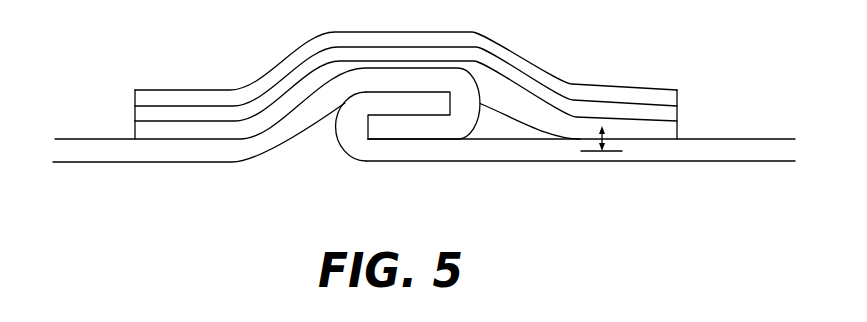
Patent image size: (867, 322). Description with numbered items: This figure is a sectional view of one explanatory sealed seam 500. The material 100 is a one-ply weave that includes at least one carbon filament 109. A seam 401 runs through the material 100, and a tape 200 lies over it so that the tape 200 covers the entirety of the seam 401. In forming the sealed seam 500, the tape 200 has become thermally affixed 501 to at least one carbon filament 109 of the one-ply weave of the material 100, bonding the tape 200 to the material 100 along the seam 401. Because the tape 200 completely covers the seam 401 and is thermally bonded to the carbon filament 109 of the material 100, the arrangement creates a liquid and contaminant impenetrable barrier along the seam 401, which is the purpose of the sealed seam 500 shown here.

The material 100 is at (690, 163).
The tape 200 is at (252, 80).
The seam 401 is at (407, 174).
The sealed seam 500 is at (424, 115).
The thermally affixed 501 is at (606, 127).
The carbon filament 109 is at (613, 153).